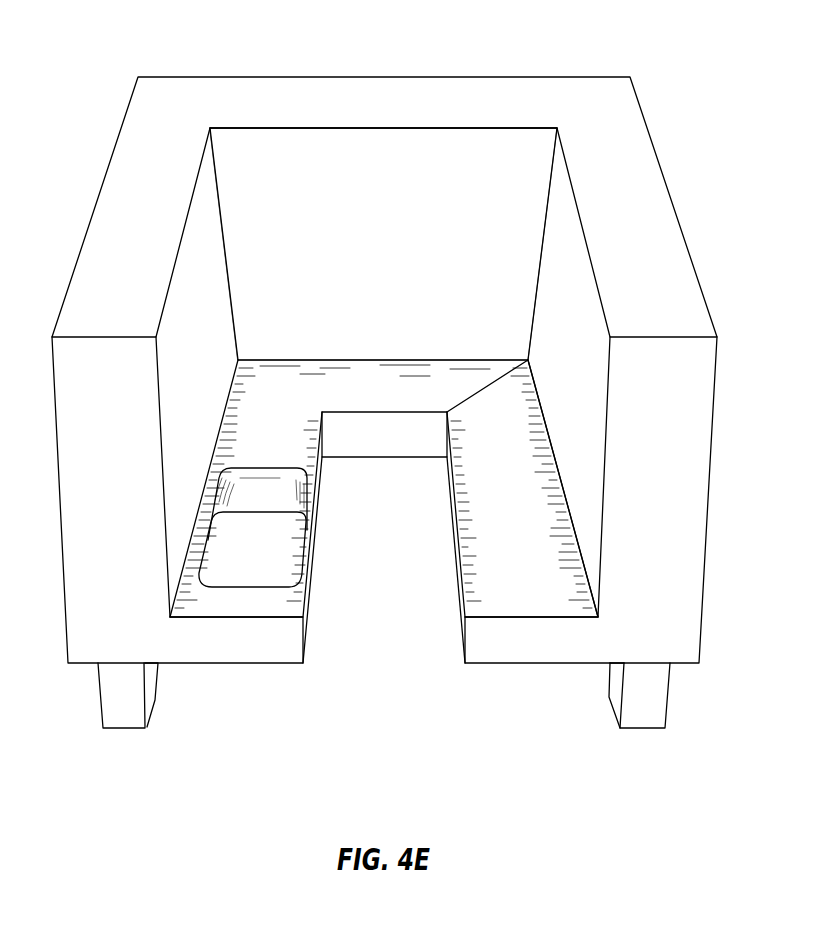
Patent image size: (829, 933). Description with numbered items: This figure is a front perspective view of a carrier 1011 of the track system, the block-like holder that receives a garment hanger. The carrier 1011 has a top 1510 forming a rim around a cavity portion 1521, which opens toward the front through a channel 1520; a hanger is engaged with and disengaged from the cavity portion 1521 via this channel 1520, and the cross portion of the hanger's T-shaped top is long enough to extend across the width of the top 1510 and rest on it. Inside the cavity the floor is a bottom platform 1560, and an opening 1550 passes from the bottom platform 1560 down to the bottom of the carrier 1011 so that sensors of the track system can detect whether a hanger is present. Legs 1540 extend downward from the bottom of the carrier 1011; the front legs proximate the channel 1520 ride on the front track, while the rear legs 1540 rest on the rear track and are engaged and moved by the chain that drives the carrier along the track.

The carrier 1011 is at (396, 381).
The top 1510 is at (670, 252).
The cavity portion 1521 is at (500, 236).
The channel 1520 is at (385, 664).
The opening 1550 is at (290, 543).
The bottom platform 1560 is at (527, 595).
The legs 1540 is at (120, 697).